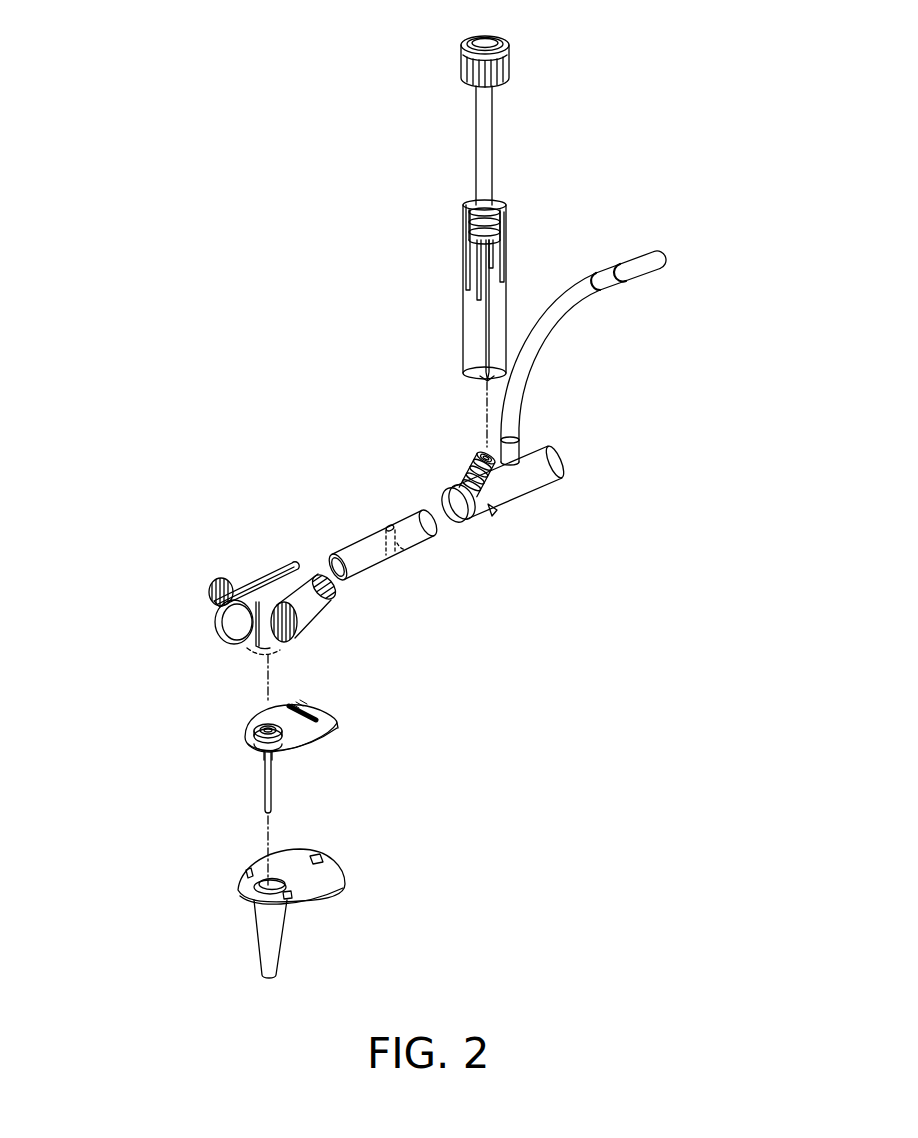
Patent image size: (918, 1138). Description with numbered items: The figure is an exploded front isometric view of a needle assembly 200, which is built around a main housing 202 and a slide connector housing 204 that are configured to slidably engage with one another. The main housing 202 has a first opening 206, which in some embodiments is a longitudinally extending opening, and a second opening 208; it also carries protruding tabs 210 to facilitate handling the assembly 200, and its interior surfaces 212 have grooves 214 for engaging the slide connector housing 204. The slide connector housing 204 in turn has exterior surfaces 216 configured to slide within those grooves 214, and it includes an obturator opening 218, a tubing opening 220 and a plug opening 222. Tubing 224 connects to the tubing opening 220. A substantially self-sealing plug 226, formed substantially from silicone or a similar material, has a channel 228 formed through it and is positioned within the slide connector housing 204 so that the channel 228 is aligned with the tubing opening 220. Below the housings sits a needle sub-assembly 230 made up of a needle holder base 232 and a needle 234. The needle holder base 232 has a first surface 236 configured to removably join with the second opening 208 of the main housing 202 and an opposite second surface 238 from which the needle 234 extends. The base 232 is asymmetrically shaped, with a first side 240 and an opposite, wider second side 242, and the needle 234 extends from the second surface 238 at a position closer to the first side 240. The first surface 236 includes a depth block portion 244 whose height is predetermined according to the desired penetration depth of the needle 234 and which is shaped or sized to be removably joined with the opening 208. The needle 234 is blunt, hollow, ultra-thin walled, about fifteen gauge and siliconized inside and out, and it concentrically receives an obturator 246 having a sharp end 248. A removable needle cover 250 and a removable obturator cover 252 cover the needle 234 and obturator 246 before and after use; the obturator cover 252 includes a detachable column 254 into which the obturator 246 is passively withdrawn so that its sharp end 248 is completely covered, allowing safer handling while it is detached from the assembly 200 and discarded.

The needle assembly 200 is at (627, 65).
The main housing 202 is at (268, 585).
The slide connector housing 204 is at (560, 455).
The first opening 206 is at (302, 580).
The second opening 208 is at (284, 650).
The protruding tabs 210 is at (220, 588).
The interior surfaces 212 is at (226, 625).
The grooves 214 is at (250, 638).
The exterior surfaces 216 is at (490, 507).
The obturator opening 218 is at (478, 452).
The tubing opening 220 is at (514, 428).
The plug opening 222 is at (530, 480).
The tubing 224 is at (580, 310).
The self-sealing plug 226 is at (400, 512).
The channel 228 is at (405, 548).
The needle sub-assembly 230 is at (90, 826).
The needle holder base 232 is at (318, 705).
The needle 234 is at (282, 797).
The first surface 236 is at (300, 705).
The second surface 238 is at (250, 757).
The first side 240 is at (250, 735).
The second side 242 is at (340, 725).
The depth block portion 244 is at (250, 780).
The obturator 246 is at (470, 325).
The sharp end 248 is at (484, 380).
The needle cover 250 is at (330, 893).
The obturator cover 252 is at (465, 212).
The detachable column 254 is at (506, 256).